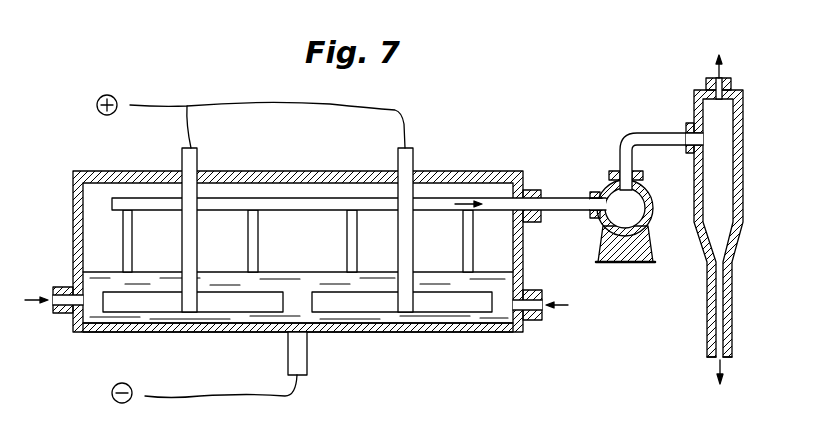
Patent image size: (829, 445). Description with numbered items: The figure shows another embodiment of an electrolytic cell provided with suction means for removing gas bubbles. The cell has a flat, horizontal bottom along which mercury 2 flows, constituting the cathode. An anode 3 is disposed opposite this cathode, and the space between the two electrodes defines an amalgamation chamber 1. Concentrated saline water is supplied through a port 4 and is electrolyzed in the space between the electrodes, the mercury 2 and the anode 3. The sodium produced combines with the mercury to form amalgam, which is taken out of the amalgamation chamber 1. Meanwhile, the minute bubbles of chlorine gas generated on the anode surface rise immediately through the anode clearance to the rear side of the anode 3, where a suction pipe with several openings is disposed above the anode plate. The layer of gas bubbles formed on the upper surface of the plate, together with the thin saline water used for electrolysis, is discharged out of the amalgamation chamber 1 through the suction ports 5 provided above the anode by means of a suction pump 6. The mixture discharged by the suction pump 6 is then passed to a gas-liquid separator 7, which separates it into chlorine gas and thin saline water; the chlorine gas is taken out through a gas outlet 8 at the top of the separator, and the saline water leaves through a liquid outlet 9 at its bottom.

The amalgamation chamber 1 is at (300, 178).
The mercury 2 is at (402, 333).
The anode 3 is at (203, 302).
The port for supply of concentrated saline water 4 is at (296, 300).
The suction ports 5 is at (306, 241).
The suction pump 6 is at (610, 192).
The gas-liquid separator 7 is at (712, 208).
The gas outlet 8 is at (723, 58).
The liquid outlet 9 is at (726, 378).